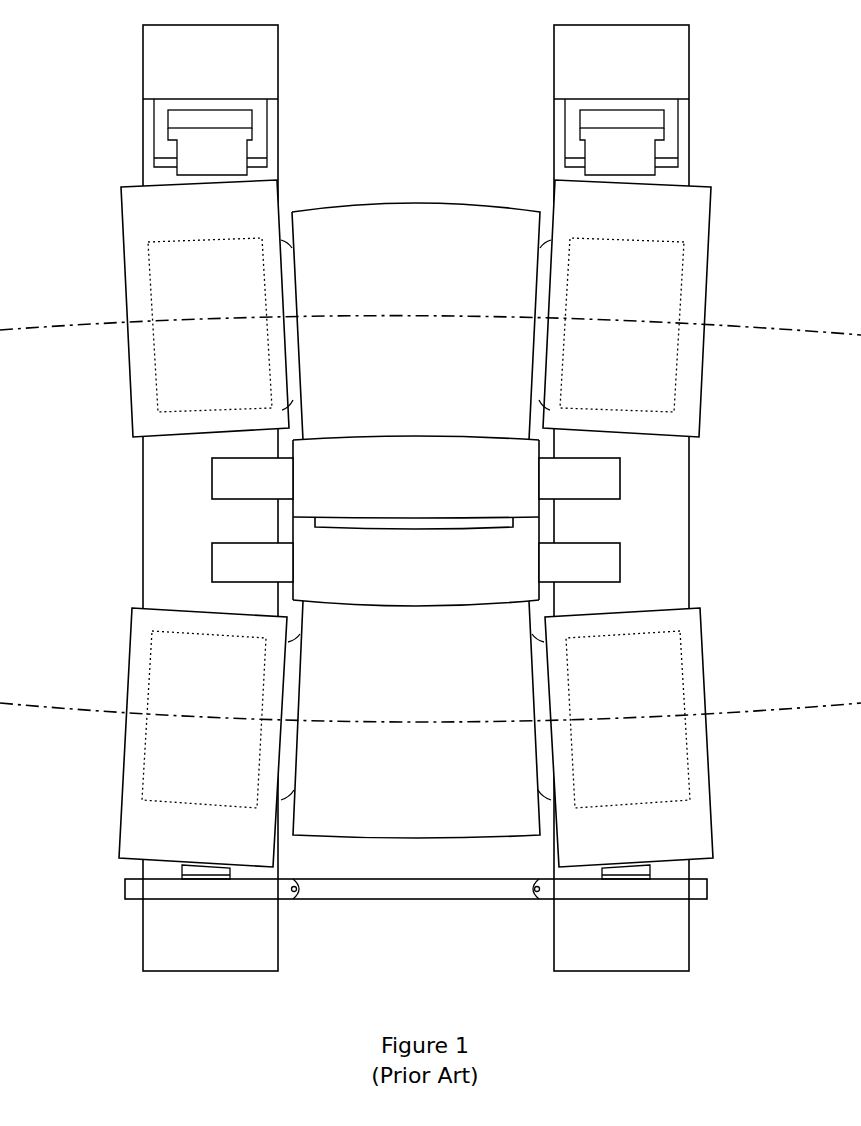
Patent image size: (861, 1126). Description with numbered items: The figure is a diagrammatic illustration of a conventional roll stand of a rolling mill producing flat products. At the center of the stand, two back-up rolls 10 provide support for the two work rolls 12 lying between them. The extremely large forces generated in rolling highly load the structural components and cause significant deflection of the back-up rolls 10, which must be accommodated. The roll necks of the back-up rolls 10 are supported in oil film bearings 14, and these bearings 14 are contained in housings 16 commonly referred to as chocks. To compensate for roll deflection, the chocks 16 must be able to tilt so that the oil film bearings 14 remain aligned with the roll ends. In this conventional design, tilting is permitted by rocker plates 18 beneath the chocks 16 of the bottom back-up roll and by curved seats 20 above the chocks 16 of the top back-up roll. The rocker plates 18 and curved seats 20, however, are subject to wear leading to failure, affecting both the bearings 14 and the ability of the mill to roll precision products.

The back-up rolls 10 is at (424, 212).
The work rolls 12 is at (418, 440).
The oil film bearings 14 is at (167, 394).
The housings 16 is at (133, 220).
The rocker plates 18 is at (207, 874).
The curved seats 20 is at (215, 180).